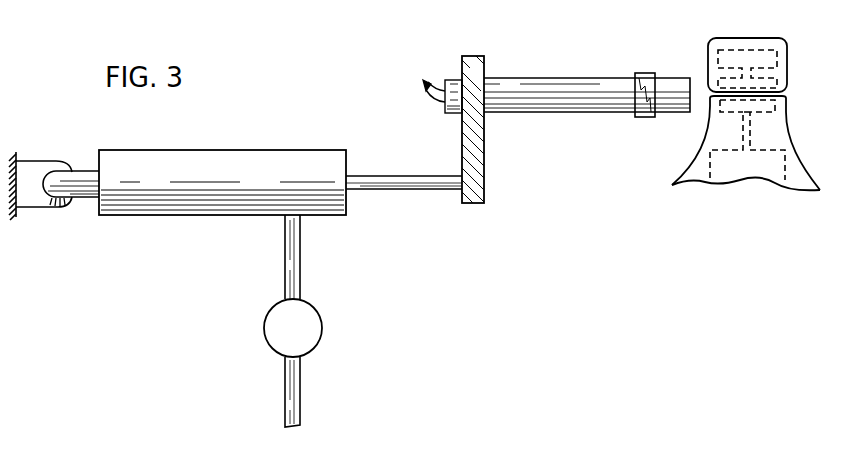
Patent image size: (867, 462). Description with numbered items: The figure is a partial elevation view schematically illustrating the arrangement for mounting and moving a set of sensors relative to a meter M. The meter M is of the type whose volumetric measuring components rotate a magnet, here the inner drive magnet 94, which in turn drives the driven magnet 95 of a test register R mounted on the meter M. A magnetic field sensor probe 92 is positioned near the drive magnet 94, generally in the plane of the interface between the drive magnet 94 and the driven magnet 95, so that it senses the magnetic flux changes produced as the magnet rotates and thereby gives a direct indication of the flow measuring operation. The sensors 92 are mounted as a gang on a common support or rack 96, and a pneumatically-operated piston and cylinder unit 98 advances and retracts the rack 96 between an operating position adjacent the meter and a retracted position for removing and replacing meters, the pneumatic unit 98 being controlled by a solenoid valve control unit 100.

The magnetic field sensor probe 92 is at (665, 78).
The inner drive magnet 94 is at (787, 104).
The driven magnet 95 is at (787, 84).
The rack 96 is at (465, 44).
The pneumatically-operated piston and cylinder unit 98 is at (262, 150).
The solenoid valve control unit 100 is at (313, 351).
The test register R is at (787, 58).
The meter M is at (800, 186).